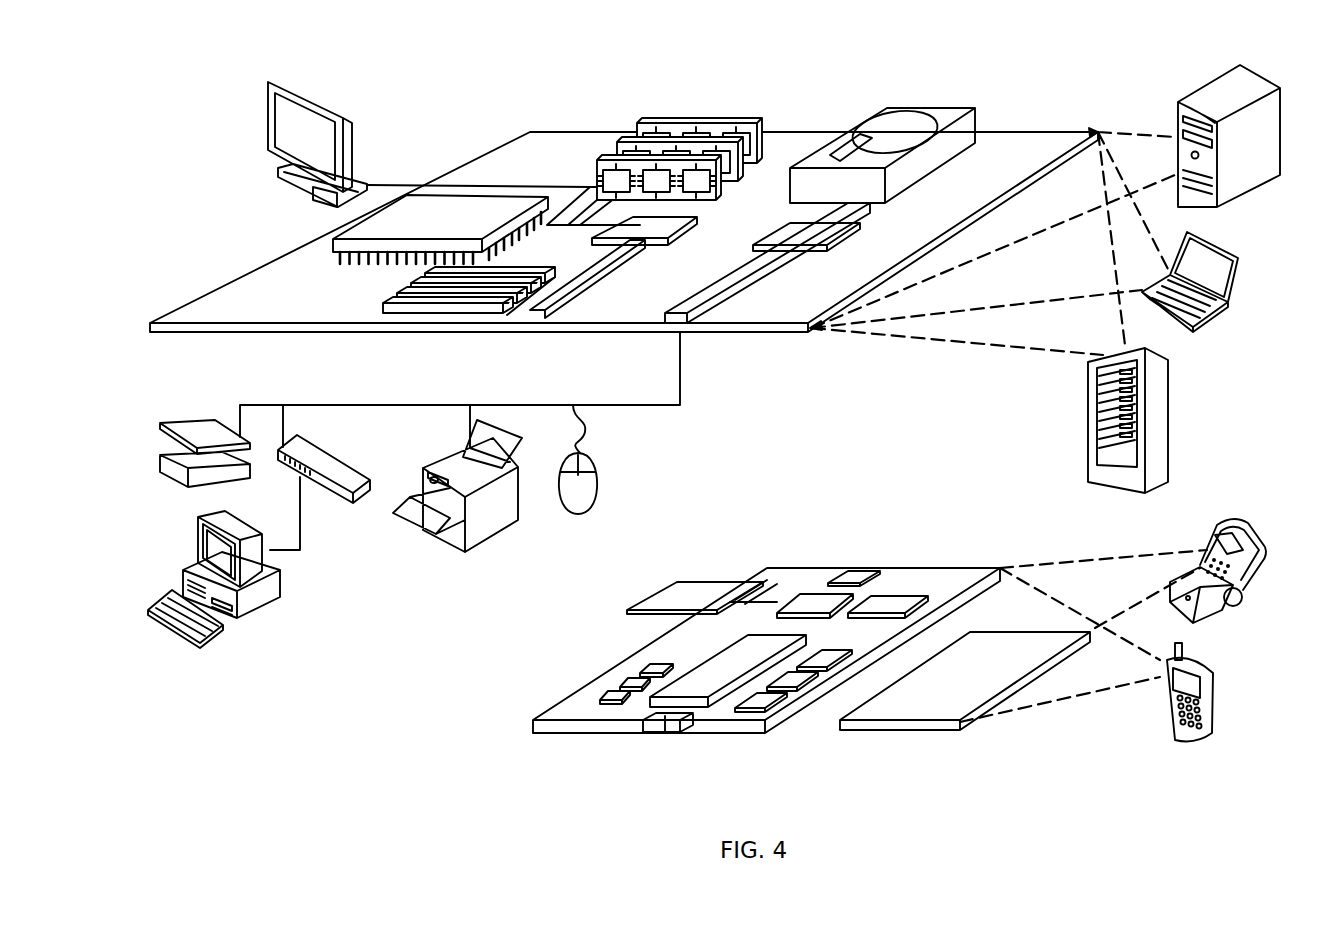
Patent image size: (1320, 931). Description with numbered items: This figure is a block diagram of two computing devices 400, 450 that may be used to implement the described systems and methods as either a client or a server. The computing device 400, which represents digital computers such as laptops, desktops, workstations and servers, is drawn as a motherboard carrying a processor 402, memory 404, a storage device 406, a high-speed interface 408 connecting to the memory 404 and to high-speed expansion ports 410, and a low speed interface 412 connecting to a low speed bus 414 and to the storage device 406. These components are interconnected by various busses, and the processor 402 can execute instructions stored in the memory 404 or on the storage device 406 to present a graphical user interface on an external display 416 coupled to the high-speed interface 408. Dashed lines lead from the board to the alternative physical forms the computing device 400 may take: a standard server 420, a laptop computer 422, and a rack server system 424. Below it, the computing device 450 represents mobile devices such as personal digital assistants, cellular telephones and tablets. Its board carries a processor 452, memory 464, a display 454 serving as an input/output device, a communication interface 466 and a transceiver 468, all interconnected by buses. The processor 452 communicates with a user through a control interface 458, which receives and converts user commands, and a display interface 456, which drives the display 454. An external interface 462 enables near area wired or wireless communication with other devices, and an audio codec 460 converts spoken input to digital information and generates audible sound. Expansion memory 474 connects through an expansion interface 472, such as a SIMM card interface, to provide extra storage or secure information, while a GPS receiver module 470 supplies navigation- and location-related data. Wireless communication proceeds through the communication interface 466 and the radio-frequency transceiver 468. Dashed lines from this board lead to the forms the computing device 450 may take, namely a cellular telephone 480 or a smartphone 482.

The computing device 400 is at (455, 105).
The processor 402 is at (333, 238).
The memory 404 is at (662, 157).
The storage device 406 is at (877, 112).
The high-speed interface 408 is at (622, 228).
The high-speed expansion ports 410 is at (400, 298).
The low speed interface 412 is at (788, 238).
The low speed bus 414 is at (685, 325).
The display 416 is at (275, 85).
The standard server 420 is at (1175, 115).
The laptop computer 422 is at (1238, 256).
The rack server system 424 is at (1088, 440).
The computing device 450 is at (510, 737).
The processor 452 is at (700, 691).
The display 454 is at (930, 703).
The display interface 456 is at (768, 700).
The control interface 458 is at (808, 683).
The audio codec 460 is at (826, 664).
The external interface 462 is at (667, 731).
The memory 464 is at (618, 686).
The communication interface 466 is at (815, 600).
The transceiver 468 is at (888, 600).
The GPS receiver module 470 is at (862, 572).
The expansion interface 472 is at (747, 582).
The expansion memory 474 is at (675, 582).
The cellular telephone 480 is at (1210, 528).
The smartphone 482 is at (1168, 700).